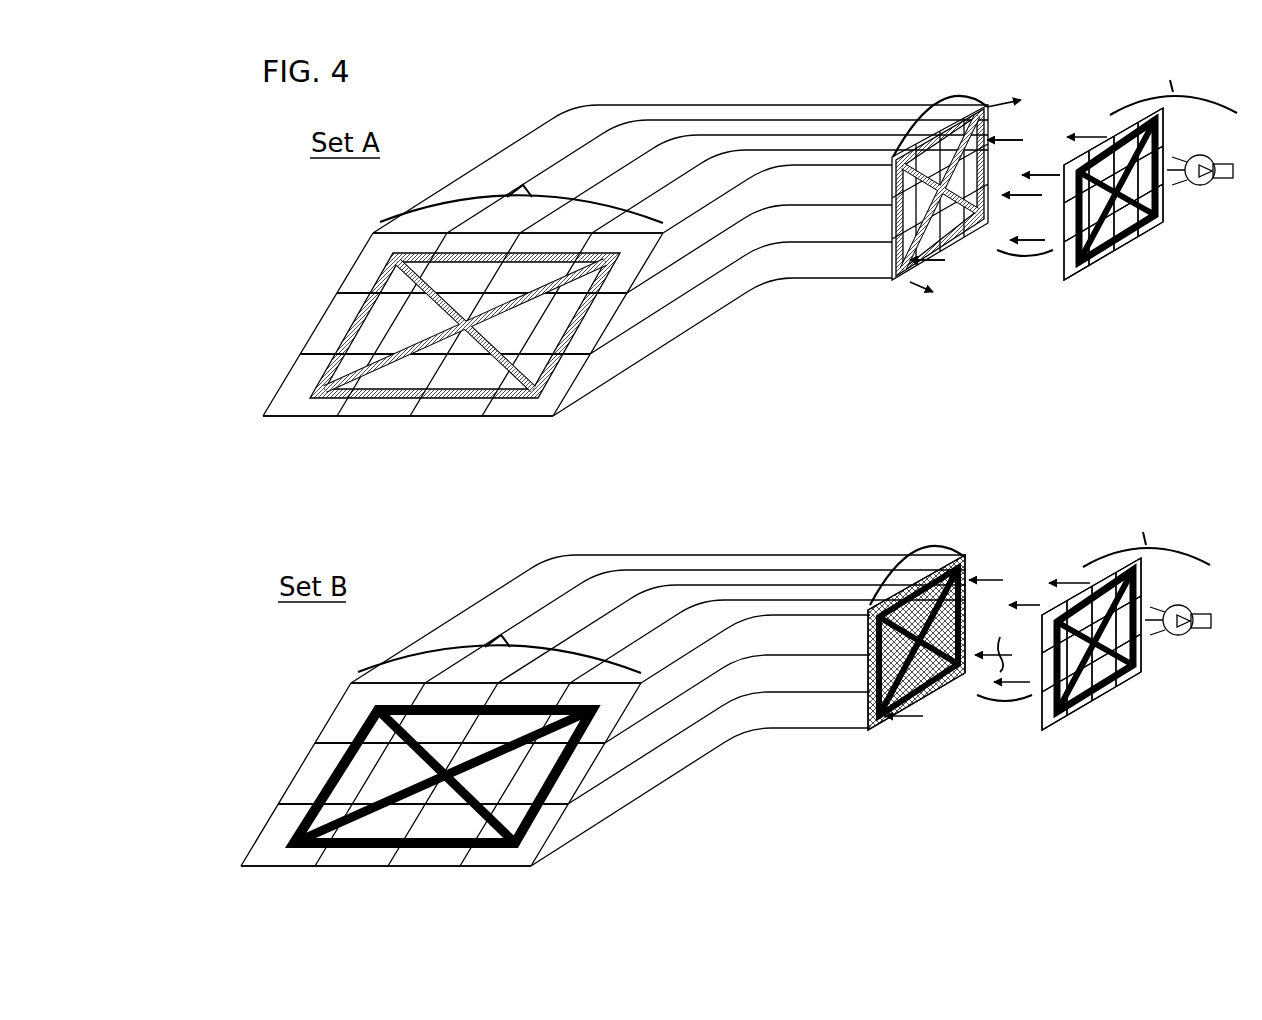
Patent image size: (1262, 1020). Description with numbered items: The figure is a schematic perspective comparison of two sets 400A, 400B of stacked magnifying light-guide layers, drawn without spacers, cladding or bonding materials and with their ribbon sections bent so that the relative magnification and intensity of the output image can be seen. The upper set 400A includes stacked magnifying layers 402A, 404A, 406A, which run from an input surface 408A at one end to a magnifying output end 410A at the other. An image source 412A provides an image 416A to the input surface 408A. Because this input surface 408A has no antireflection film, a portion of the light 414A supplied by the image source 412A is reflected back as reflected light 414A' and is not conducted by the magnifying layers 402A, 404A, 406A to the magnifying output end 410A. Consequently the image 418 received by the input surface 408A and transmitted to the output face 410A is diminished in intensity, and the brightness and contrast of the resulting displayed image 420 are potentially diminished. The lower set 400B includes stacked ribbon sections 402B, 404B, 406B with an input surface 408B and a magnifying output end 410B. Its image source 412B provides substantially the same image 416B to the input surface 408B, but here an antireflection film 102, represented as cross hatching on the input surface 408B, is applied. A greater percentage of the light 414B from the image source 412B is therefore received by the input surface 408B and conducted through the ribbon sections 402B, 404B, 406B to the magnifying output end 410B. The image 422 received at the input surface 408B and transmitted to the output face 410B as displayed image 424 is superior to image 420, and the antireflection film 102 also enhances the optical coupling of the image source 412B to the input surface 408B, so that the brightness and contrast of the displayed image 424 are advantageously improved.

The set of stacked magnifying layers 400A is at (588, 86).
The magnifying layer 402A is at (356, 265).
The magnifying layer 404A is at (320, 325).
The magnifying layer 406A is at (283, 388).
The input surface 408A is at (930, 113).
The magnifying output end 410A is at (523, 187).
The image source 412A is at (1150, 166).
The light 414A is at (985, 231).
The reflected light 414A' is at (958, 196).
The image 416A is at (1150, 220).
The image received by input surface 418 is at (953, 238).
The displayed image 420 is at (362, 400).
The set of stacked ribbon sections 400B is at (560, 531).
The ribbon section 402B is at (334, 715).
The ribbon section 404B is at (298, 775).
The ribbon section 406B is at (261, 838).
The input surface 408B is at (903, 565).
The magnifying output end 410B is at (501, 637).
The image source 412B is at (1126, 617).
The light 414B is at (1003, 700).
The image 416B is at (1128, 670).
The image received by input surface 422 is at (925, 693).
The displayed image 424 is at (525, 843).
The antireflection film 102 is at (880, 727).